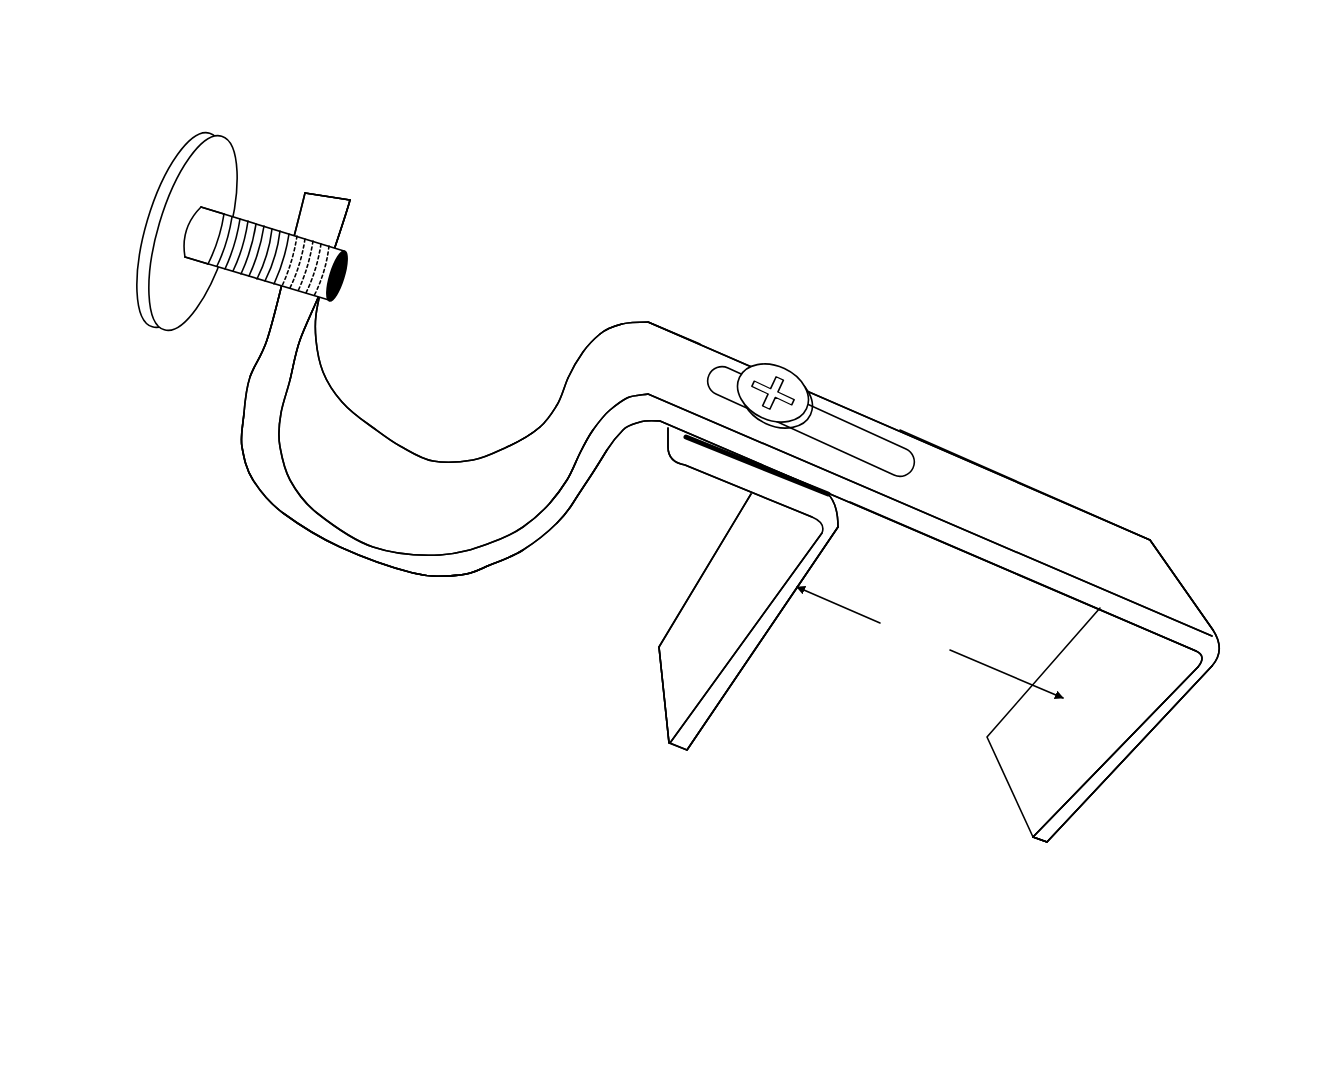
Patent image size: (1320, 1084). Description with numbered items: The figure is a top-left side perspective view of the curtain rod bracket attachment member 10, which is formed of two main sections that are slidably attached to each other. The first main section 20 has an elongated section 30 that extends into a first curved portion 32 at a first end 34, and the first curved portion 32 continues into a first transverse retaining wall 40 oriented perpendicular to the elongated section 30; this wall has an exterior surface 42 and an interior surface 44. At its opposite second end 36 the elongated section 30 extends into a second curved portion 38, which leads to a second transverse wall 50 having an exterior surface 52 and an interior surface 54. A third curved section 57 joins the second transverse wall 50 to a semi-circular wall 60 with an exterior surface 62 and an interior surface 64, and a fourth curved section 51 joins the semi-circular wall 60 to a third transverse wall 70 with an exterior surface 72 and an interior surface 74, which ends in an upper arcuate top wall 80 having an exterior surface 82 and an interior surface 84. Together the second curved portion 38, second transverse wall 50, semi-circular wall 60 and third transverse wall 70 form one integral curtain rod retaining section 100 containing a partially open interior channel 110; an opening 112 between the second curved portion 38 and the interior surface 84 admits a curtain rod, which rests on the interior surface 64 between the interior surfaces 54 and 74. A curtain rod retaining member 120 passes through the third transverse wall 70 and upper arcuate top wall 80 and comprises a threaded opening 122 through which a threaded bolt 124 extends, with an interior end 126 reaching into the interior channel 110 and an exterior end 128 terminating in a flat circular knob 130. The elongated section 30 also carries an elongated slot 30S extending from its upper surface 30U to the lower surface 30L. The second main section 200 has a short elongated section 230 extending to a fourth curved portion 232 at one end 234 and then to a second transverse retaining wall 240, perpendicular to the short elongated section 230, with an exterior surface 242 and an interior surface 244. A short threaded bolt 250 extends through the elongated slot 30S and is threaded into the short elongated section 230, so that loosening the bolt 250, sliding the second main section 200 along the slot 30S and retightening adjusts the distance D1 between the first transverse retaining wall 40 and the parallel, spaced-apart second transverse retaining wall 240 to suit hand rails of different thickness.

The curtain rod bracket attachment member 10 is at (907, 297).
The first main section 20 is at (710, 290).
The elongated section 30 is at (1033, 480).
The upper surface of the elongated section 30U is at (930, 487).
The lower surface 30L is at (880, 520).
The elongated slot 30S is at (830, 433).
The first curved portion 32 is at (1210, 647).
The first end 34 is at (1150, 537).
The second end 36 is at (650, 322).
The second curved portion 38 is at (597, 353).
The first transverse retaining wall 40 is at (1143, 743).
The exterior surface of first transverse retaining wall 42 is at (1103, 783).
The interior surface of first transverse retaining wall 44 is at (1057, 793).
The second transverse wall 50 is at (547, 533).
The fourth curved section 51 is at (247, 453).
The exterior surface of second transverse wall 52 is at (577, 497).
The interior surface of second transverse wall 54 is at (550, 437).
The third curved section 57 is at (500, 563).
The semi-circular wall 60 is at (375, 587).
The exterior surface of semi-circular wall 62 is at (450, 577).
The interior surface of semi-circular wall 64 is at (433, 487).
The third transverse wall 70 is at (220, 407).
The exterior surface of third transverse wall 72 is at (250, 377).
The interior surface of third transverse wall 74 is at (297, 352).
The upper arcuate top wall 80 is at (363, 190).
The exterior surface of upper arcuate top wall 82 is at (303, 190).
The interior surface of upper arcuate top wall 84 is at (350, 230).
The curtain rod retaining section 100 is at (277, 617).
The partially open interior channel 110 is at (421, 351).
The opening 112 is at (507, 280).
The curtain rod retaining member 120 is at (243, 120).
The threaded opening 122 is at (342, 257).
The threaded bolt 124 is at (230, 280).
The interior end of threaded bolt 126 is at (340, 280).
The exterior end of threaded bolt 128 is at (217, 223).
The flat circular knob 130 is at (193, 142).
The second main section 200 is at (775, 722).
The short elongated section 230 is at (697, 493).
The fourth curved portion 232 is at (838, 527).
The end of short elongated section 234 is at (827, 493).
The second transverse retaining wall 240 is at (663, 613).
The exterior surface of second transverse retaining wall 242 is at (677, 707).
The interior surface of second transverse retaining wall 244 is at (747, 670).
The short threaded bolt 250 is at (786, 378).
The distance D1 is at (930, 642).